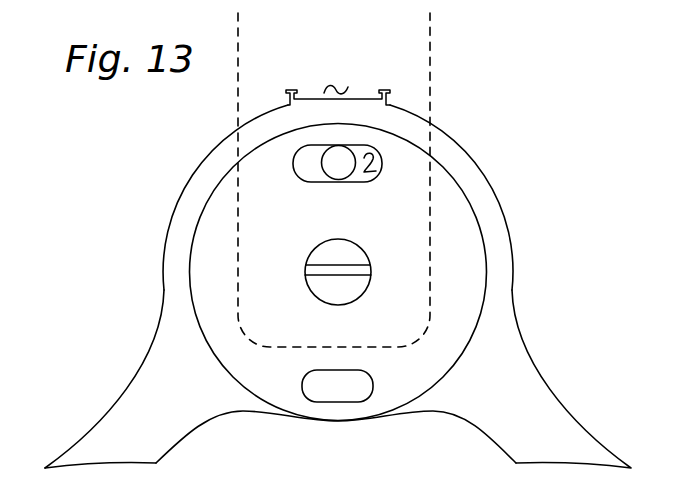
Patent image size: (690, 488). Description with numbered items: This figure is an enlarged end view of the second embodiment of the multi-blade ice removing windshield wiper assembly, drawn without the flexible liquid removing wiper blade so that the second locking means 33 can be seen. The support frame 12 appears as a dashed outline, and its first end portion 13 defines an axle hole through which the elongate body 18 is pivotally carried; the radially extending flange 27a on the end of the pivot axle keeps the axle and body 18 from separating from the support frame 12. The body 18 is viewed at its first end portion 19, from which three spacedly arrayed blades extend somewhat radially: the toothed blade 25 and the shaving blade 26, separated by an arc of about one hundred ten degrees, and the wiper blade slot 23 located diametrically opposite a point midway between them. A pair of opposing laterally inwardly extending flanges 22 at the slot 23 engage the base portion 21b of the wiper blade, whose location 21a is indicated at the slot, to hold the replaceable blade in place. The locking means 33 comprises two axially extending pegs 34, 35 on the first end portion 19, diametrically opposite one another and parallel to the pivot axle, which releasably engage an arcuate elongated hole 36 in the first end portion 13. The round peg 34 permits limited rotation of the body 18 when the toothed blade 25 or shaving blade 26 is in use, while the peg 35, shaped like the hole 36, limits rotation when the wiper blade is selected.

The support frame 12 is at (237, 111).
The first end portion 13 is at (350, 286).
The elongate body 18 is at (509, 220).
The first end portion 19 is at (213, 263).
The foot portion 21a is at (448, 478).
The base portion 21b is at (406, 483).
The laterally inwardly extending flanges 22 is at (288, 92).
The wiper blade slot 23 is at (337, 87).
The toothed blade 25 is at (592, 461).
The shaving blade 26 is at (80, 458).
The radially extending flange 27a is at (323, 250).
The locking means 33 is at (352, 147).
The peg 34 is at (333, 167).
The peg 35 is at (317, 387).
The arcuate elongated hole 36 is at (376, 166).